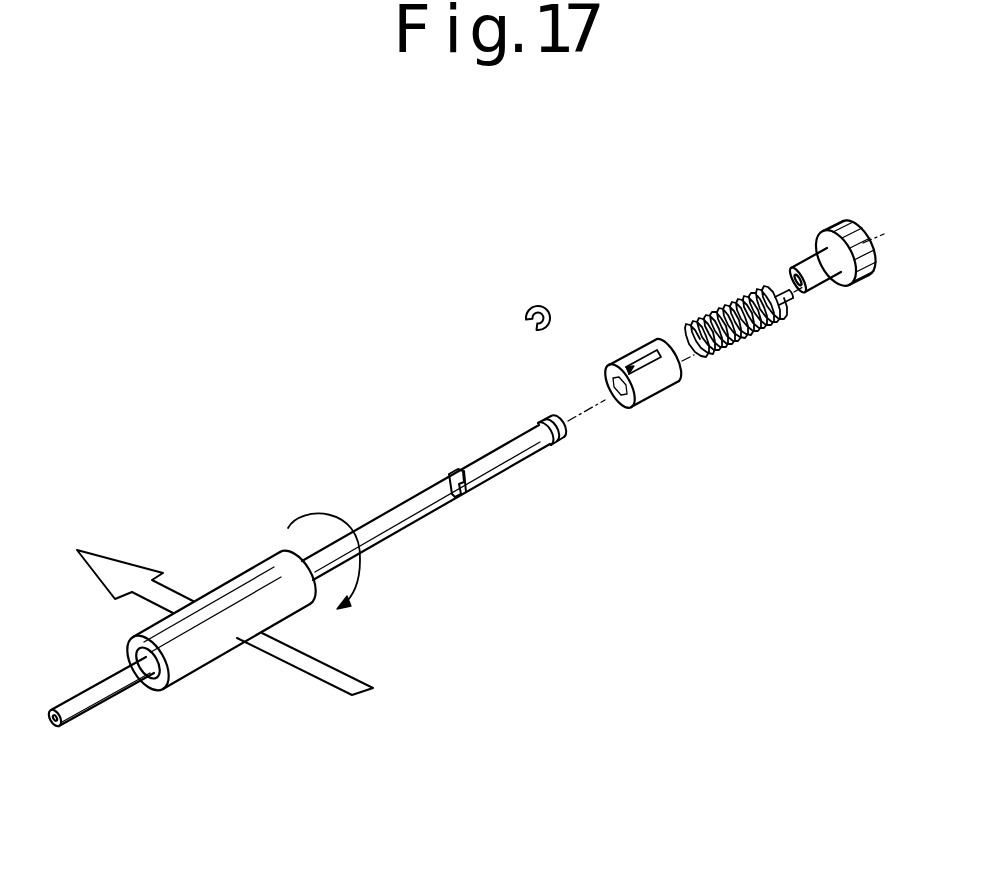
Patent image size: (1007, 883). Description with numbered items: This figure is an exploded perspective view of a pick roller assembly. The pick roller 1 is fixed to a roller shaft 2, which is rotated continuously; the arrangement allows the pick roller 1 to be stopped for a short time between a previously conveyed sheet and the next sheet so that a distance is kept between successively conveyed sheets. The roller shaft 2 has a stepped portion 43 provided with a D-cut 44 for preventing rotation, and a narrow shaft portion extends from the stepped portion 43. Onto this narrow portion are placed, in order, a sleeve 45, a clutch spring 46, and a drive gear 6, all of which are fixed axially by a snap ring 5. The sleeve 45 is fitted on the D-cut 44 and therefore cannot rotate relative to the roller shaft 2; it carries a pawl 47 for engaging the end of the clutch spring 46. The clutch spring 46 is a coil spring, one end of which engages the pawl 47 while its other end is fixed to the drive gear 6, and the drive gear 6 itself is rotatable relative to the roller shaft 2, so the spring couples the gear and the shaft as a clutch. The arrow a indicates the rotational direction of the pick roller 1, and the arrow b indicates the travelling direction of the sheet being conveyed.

The pick roller 1 is at (226, 645).
The roller shaft 2 is at (398, 522).
The snap ring 5 is at (537, 305).
The drive gear 6 is at (860, 278).
The stepped portion 43 is at (458, 474).
The D-cut 44 is at (463, 490).
The sleeve 45 is at (627, 352).
The clutch spring 46 is at (738, 297).
The pawl 47 is at (650, 363).
The arrow a is at (334, 575).
The arrow b is at (333, 683).